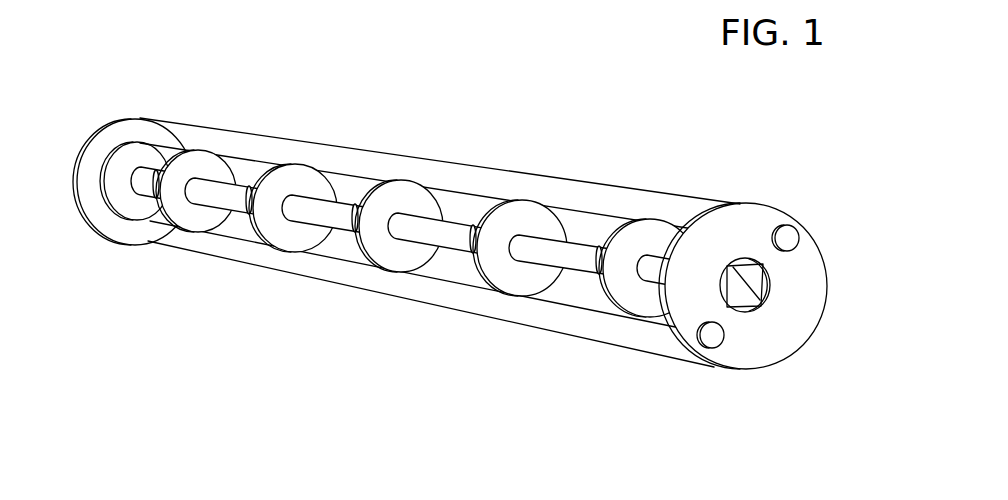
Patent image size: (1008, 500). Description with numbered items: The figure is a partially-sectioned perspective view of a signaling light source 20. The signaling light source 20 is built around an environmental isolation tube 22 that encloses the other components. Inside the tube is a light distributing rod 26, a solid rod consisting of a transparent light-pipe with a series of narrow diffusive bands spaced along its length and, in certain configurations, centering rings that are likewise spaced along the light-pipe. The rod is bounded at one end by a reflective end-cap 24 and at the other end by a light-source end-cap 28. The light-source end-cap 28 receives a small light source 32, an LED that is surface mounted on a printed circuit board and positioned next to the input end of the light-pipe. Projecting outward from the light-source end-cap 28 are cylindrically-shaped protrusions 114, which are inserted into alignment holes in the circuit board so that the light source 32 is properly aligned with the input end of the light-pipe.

The signaling light source 20 is at (465, 246).
The environmental isolation tube 22 is at (175, 264).
The reflective end-cap 24 is at (98, 127).
The light distributing rod 26 is at (452, 260).
The light-source end-cap 28 is at (803, 275).
The light source 32 is at (748, 288).
The cylindrically-shaped protrusions 114 is at (788, 232).